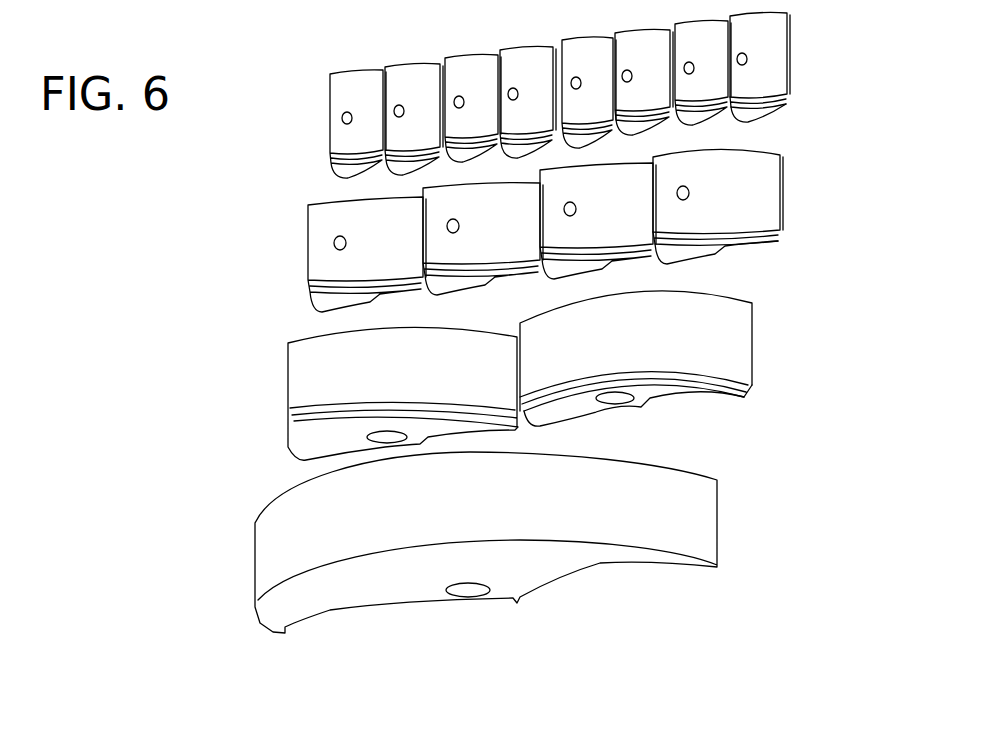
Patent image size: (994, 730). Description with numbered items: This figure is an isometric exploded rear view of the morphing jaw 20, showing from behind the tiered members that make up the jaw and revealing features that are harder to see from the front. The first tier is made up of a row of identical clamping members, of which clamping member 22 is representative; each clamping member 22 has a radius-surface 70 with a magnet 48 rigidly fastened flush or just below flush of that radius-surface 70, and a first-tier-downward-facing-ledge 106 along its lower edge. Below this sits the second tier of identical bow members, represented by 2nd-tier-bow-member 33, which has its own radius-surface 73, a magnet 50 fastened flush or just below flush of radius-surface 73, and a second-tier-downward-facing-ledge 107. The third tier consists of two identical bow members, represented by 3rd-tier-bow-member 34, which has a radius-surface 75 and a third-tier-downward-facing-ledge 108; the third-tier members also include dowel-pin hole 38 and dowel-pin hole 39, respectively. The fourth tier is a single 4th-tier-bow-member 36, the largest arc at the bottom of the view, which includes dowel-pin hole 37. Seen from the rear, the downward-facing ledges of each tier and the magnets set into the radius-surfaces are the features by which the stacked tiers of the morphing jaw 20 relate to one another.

The morphing jaw 20 is at (272, 92).
The clamping member 22 is at (755, 108).
The radius-surface 70 is at (765, 73).
The magnet 48 is at (745, 57).
The first-tier-downward-facing-ledge 106 is at (783, 97).
The radius-surface 73 is at (760, 192).
The magnet 50 is at (690, 193).
The second-tier-downward-facing-ledge 107 is at (773, 233).
The 2nd-tier-bow-member 33 is at (710, 245).
The radius-surface 75 is at (708, 341).
The third-tier-downward-facing-ledge 108 is at (750, 380).
The dowel-pin hole 38 is at (612, 401).
The 3rd-tier-bow-member 34 is at (648, 390).
The dowel-pin hole 39 is at (383, 436).
The 4th-tier-bow-member 36 is at (525, 560).
The dowel-pin hole 37 is at (470, 592).